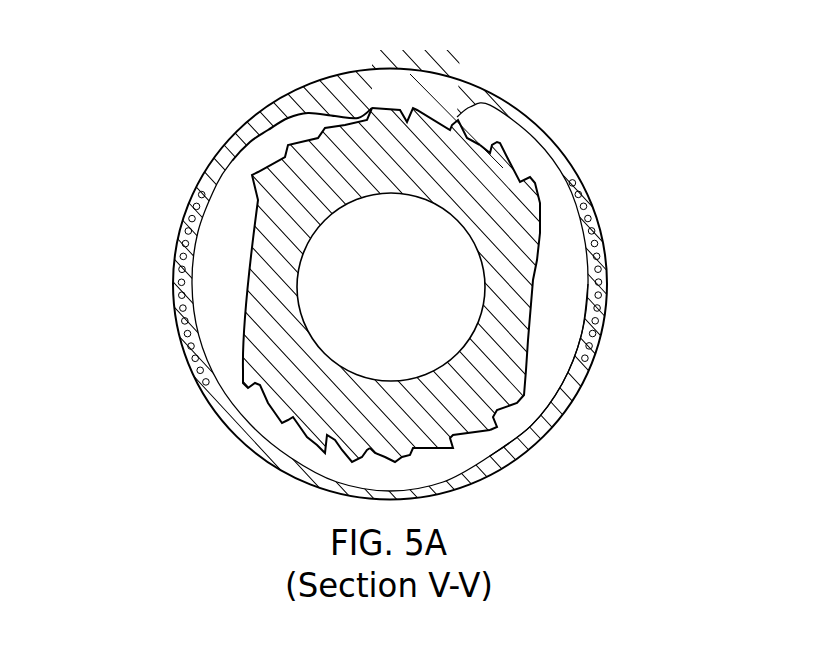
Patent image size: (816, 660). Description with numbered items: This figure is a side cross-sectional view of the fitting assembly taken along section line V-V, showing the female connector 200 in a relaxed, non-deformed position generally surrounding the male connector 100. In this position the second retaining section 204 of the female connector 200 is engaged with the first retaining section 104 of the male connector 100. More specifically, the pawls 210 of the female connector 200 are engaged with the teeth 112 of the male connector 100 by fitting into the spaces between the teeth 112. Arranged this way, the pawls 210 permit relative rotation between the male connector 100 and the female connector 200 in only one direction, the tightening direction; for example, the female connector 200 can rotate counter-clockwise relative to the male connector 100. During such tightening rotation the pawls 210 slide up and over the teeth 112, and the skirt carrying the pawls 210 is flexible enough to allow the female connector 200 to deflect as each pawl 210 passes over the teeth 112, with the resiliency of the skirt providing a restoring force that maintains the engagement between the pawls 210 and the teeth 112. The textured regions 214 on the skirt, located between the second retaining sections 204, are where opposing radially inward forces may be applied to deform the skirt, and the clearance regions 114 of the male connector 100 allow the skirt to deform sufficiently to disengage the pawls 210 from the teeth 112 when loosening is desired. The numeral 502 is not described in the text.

The male connector 100 is at (497, 353).
The first retaining section 104 is at (363, 425).
The teeth 112 is at (500, 160).
The clearance regions 114 is at (525, 290).
The female connector 200 is at (257, 130).
The second retaining section 204 is at (447, 467).
The pawls 210 is at (366, 105).
The textured regions 214 is at (177, 260).
The toothed section 502 is at (440, 86).